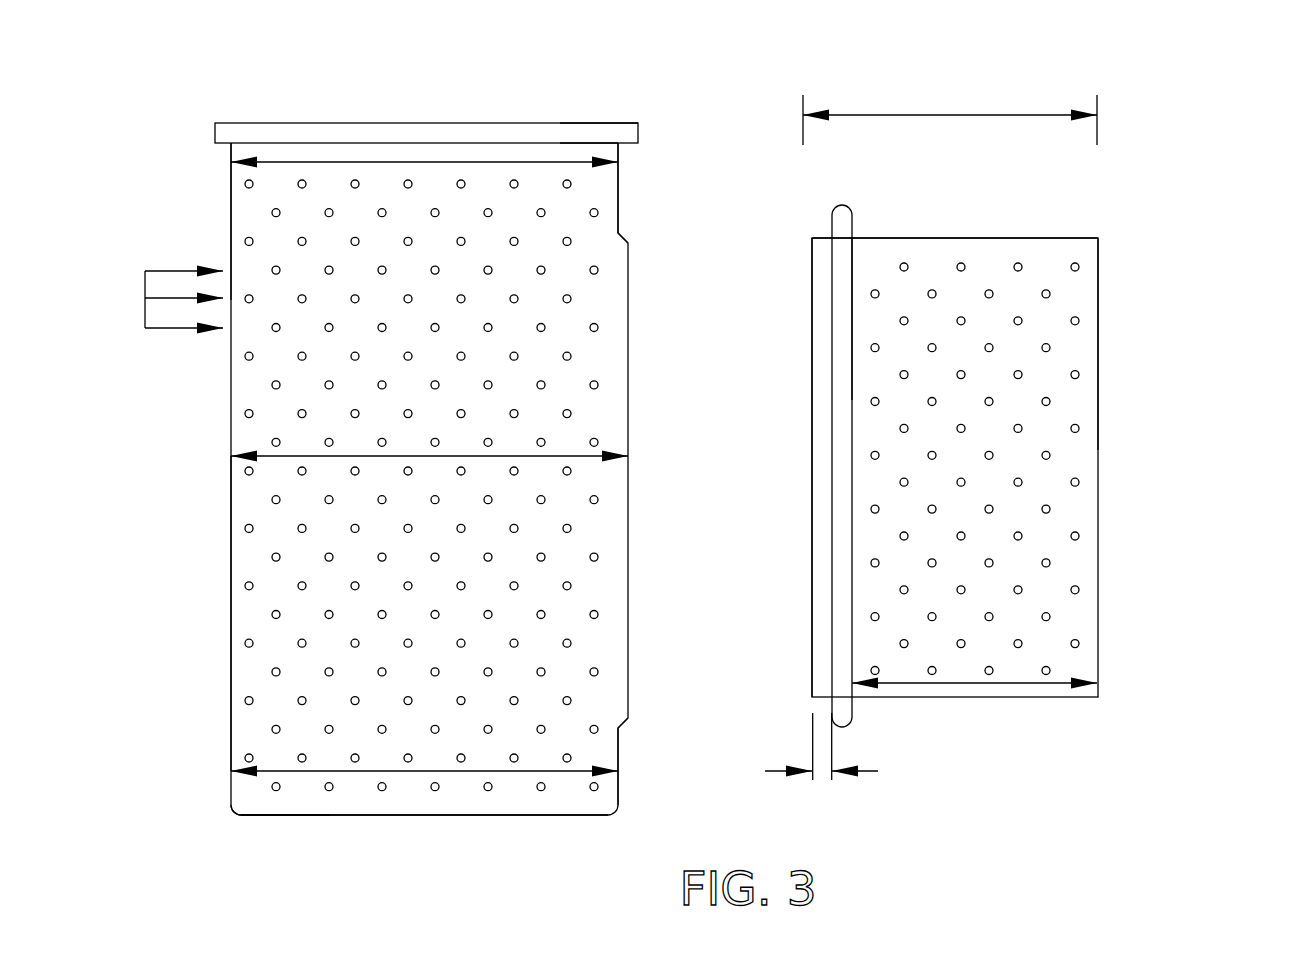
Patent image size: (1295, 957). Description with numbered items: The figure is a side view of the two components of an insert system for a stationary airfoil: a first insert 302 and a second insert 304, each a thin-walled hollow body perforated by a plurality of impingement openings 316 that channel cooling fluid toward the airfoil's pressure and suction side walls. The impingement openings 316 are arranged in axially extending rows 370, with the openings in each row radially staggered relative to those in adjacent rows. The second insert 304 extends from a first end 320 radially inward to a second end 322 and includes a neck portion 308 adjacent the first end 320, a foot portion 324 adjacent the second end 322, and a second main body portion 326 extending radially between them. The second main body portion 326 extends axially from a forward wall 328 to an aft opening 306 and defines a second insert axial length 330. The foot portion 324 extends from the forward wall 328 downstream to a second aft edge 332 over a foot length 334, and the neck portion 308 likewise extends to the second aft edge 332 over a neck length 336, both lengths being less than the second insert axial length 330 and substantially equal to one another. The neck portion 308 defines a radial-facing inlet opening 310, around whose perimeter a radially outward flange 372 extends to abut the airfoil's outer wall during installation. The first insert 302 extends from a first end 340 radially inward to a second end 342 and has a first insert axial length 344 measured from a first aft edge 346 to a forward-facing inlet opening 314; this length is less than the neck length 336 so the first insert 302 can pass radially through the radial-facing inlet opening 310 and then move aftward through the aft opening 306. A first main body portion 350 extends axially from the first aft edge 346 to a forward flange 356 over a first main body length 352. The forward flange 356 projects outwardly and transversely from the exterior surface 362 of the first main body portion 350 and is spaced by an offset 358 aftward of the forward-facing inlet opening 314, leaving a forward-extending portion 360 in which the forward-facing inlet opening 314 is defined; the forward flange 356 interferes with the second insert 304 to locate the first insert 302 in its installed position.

The first insert 302 is at (1099, 573).
The second insert 304 is at (231, 630).
The aft opening 306 is at (640, 347).
The neck portion 308 is at (600, 189).
The radial-facing inlet opening 310 is at (398, 112).
The forward-facing inlet opening 314 is at (798, 503).
The impingement openings 316 is at (298, 704).
The first end 320 is at (237, 97).
The second end 322 is at (268, 828).
The foot portion 324 is at (607, 795).
The second main body portion 326 is at (248, 494).
The forward wall 328 is at (231, 539).
The second insert axial length 330 is at (563, 456).
The second aft edge 332 is at (620, 208).
The foot length 334 is at (272, 771).
The neck length 336 is at (282, 162).
The first end 340 is at (988, 213).
The second end 342 is at (976, 722).
The first insert axial length 344 is at (975, 115).
The first aft edge 346 is at (1099, 407).
The first main body portion 350 is at (1090, 510).
The first main body length 352 is at (1037, 685).
The forward flange 356 is at (843, 727).
The offset 358 is at (822, 780).
The forward-extending portion 360 is at (812, 638).
The exterior surface 362 is at (886, 248).
The rows 370 is at (145, 297).
The radially outward flange 372 is at (605, 122).